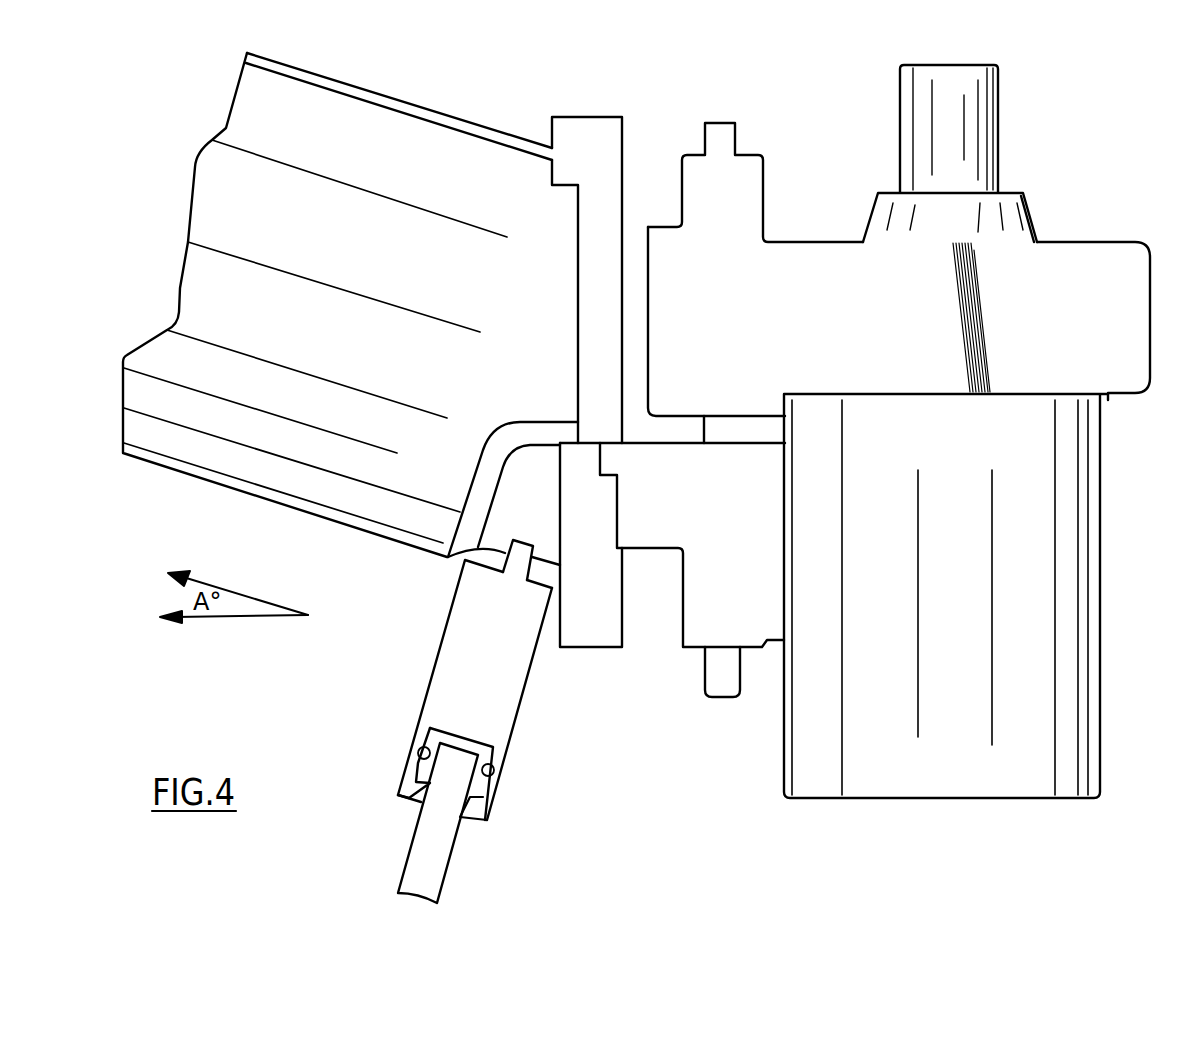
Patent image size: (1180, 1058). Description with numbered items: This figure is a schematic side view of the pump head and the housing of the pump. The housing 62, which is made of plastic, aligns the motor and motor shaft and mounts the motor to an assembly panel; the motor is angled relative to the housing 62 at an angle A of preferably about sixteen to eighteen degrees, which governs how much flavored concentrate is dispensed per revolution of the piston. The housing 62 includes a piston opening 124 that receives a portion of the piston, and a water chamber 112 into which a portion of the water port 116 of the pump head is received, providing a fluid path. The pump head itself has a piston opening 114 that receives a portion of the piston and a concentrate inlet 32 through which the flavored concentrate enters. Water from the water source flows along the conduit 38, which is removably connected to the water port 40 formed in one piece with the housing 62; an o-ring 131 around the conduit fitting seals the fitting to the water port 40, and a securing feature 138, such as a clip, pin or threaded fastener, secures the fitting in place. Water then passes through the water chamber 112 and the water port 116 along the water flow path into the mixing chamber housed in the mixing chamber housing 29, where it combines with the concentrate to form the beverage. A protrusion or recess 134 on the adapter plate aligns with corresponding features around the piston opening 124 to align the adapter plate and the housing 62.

The housing 62 is at (445, 115).
The piston opening 124 is at (603, 327).
The water chamber 112 is at (515, 493).
The piston opening 114 is at (648, 314).
The concentrate inlet 32 is at (997, 127).
The mixing chamber housing 29 is at (1097, 607).
The water port 116 is at (665, 550).
The water port 40 is at (473, 655).
The securing feature 138 is at (443, 730).
The o-ring 131 is at (497, 770).
The protrusion or recess 134 is at (490, 816).
The conduit 38 is at (425, 843).